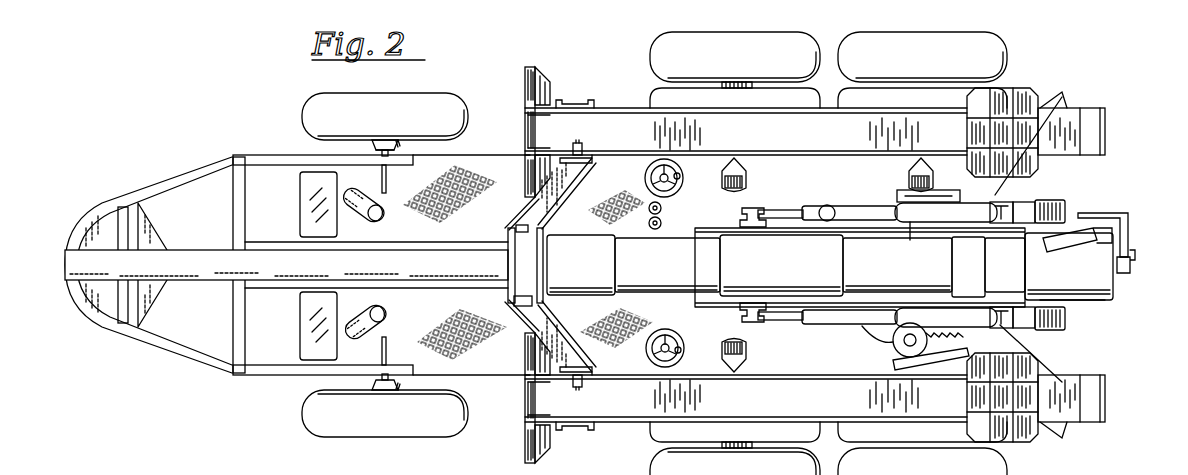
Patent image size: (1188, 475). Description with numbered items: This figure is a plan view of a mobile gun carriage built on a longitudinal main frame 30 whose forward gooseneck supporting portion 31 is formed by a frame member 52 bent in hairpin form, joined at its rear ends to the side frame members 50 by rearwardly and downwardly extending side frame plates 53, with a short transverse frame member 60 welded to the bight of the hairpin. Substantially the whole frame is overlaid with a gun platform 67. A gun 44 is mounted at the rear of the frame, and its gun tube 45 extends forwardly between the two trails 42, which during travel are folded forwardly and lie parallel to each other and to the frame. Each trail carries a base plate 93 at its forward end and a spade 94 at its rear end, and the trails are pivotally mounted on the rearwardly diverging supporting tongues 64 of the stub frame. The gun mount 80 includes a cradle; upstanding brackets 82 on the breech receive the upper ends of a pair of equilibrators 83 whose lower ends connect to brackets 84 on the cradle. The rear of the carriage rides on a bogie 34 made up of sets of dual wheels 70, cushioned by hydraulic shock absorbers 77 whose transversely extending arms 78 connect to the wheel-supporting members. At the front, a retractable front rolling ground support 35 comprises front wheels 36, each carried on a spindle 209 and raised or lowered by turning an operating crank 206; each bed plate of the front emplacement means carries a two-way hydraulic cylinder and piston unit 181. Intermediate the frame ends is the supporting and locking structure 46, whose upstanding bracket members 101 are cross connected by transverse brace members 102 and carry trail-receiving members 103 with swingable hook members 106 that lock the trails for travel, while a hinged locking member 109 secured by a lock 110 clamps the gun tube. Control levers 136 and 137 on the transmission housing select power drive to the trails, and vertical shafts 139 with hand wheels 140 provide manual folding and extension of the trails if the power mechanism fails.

The longitudinal main frame 30 is at (249, 151).
The supporting portion 31 is at (133, 349).
The bogie 34 is at (1022, 45).
The front rolling ground support 35 is at (453, 100).
The retractable front wheels 36 is at (312, 112).
The trails 42 is at (832, 146).
The gun 44 is at (800, 258).
The gun tube 45 is at (470, 265).
The supporting and locking structure 46 is at (520, 217).
The side frame members 50 is at (478, 162).
The hairpin frame member 52 is at (100, 328).
The side frame plates 53 is at (284, 164).
The short transverse frame member 60 is at (126, 212).
The supporting tongues 64 is at (1062, 97).
The gun platform 67 is at (512, 376).
The dual wheels 70 is at (850, 77).
The shock absorbers 77 is at (748, 185).
The transversely extending arm 78 is at (827, 265).
The gun mount 80 is at (905, 233).
The upstanding brackets 82 is at (1050, 200).
The equilibrators 83 is at (915, 314).
The brackets 84 is at (740, 271).
The base plate 93 is at (1012, 92).
The spade 94 is at (537, 67).
The upstanding bracket members 101 is at (590, 158).
The transverse brace members 102 is at (573, 178).
The trail-receiving member 103 is at (592, 90).
The hook member 106 is at (577, 143).
The locking member 109 is at (508, 238).
The lock 110 is at (513, 304).
The control lever 136 is at (662, 207).
The control lever 137 is at (662, 223).
The vertical shaft 139 is at (680, 175).
The hand wheel 140 is at (648, 172).
The two-way hydraulic cylinder and piston unit 181 is at (382, 218).
The operating crank 206 is at (341, 263).
The spindle 209 is at (406, 264).